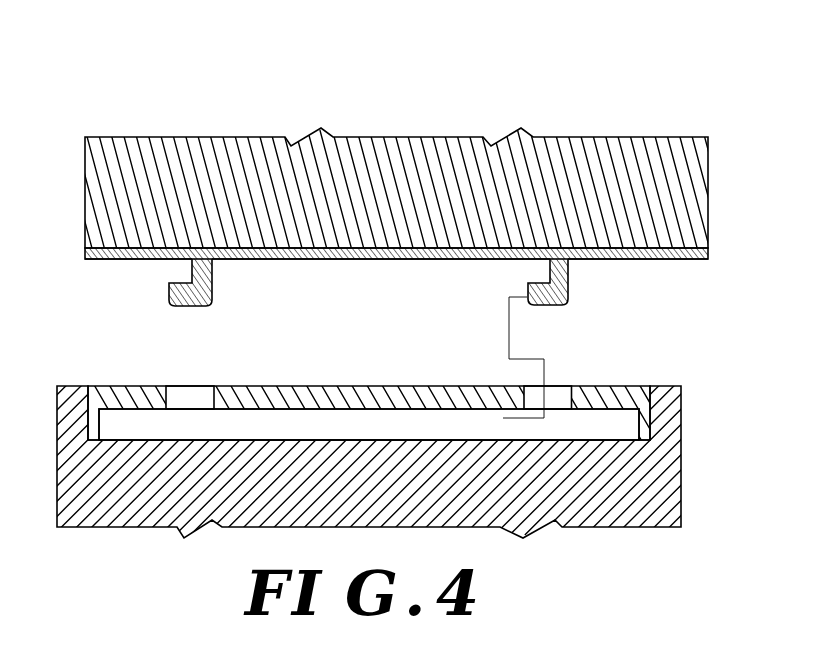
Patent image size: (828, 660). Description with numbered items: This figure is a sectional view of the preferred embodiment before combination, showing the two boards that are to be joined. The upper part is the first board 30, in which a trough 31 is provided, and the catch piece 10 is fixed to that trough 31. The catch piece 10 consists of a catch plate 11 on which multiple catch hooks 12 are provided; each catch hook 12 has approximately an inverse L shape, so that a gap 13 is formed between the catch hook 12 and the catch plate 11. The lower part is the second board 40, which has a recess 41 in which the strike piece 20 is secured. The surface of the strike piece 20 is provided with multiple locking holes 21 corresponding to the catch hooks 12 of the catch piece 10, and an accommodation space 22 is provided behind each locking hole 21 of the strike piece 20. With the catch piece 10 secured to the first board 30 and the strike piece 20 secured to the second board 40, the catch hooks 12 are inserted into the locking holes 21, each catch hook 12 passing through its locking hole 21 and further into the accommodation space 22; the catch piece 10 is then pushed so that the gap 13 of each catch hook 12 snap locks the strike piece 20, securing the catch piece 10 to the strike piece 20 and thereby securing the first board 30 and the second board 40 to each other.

The catch piece 10 is at (376, 196).
The catch plate 11 is at (308, 258).
The catch hook 12 is at (169, 295).
The gap 13 is at (528, 279).
The strike piece 20 is at (630, 390).
The locking hole 21 is at (186, 395).
The accommodation space 22 is at (377, 427).
The first board 30 is at (85, 155).
The trough 31 is at (85, 250).
The second board 40 is at (67, 403).
The recess 41 is at (618, 440).